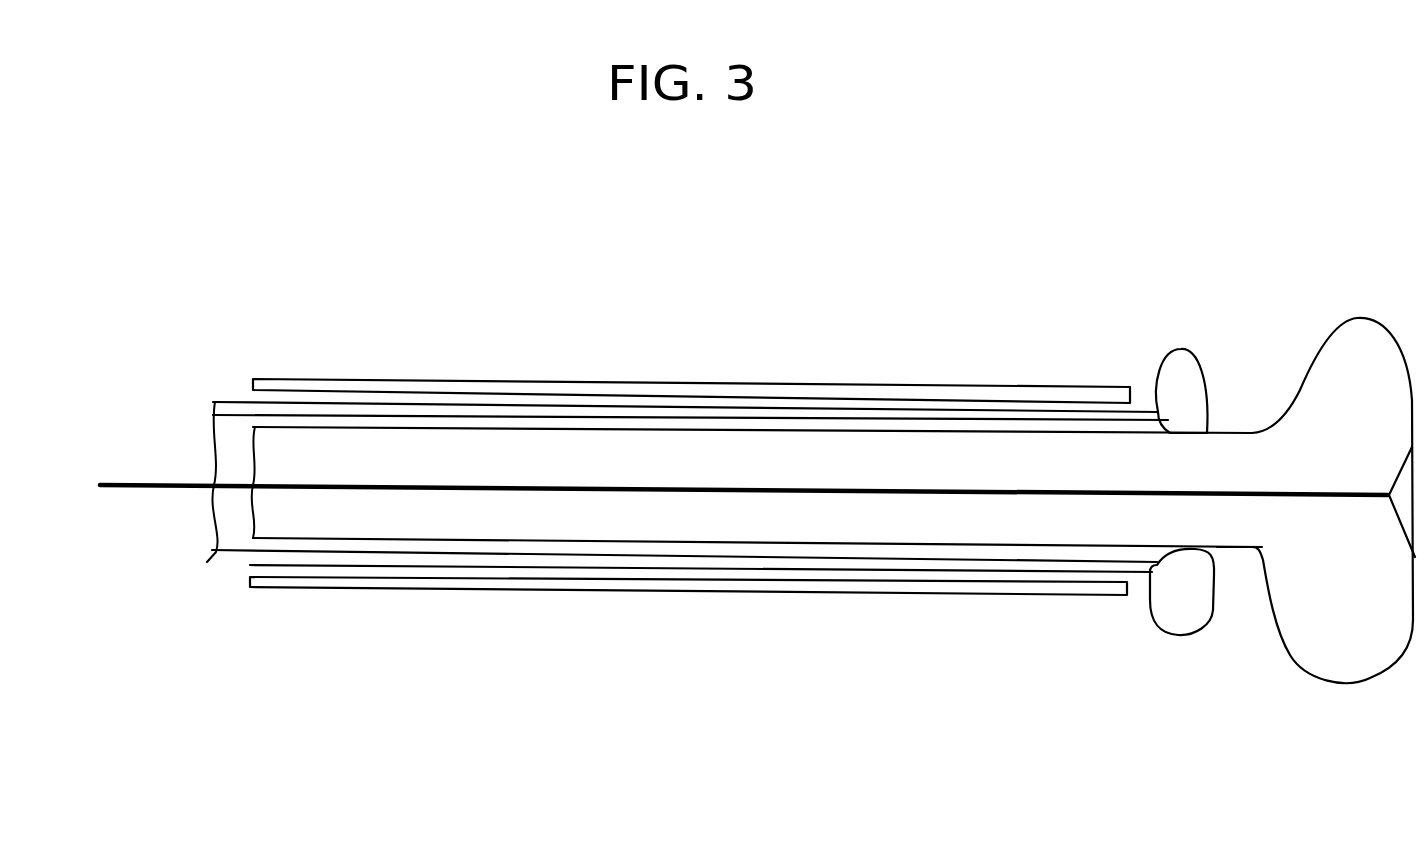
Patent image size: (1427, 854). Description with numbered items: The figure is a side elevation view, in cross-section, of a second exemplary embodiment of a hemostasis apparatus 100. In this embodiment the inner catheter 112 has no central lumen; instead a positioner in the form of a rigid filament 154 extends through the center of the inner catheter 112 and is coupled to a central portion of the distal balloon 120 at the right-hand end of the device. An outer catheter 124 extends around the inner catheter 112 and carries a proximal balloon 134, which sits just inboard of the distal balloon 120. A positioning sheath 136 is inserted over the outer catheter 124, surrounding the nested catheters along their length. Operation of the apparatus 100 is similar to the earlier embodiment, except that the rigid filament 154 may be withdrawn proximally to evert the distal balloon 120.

The hemostasis apparatus 100 is at (780, 248).
The inner catheter 112 is at (346, 518).
The distal balloon 120 is at (1360, 316).
The outer catheter 124 is at (214, 405).
The proximal balloon 134 is at (1167, 640).
The positioning sheath 136 is at (432, 385).
The rigid filament 154 is at (519, 494).